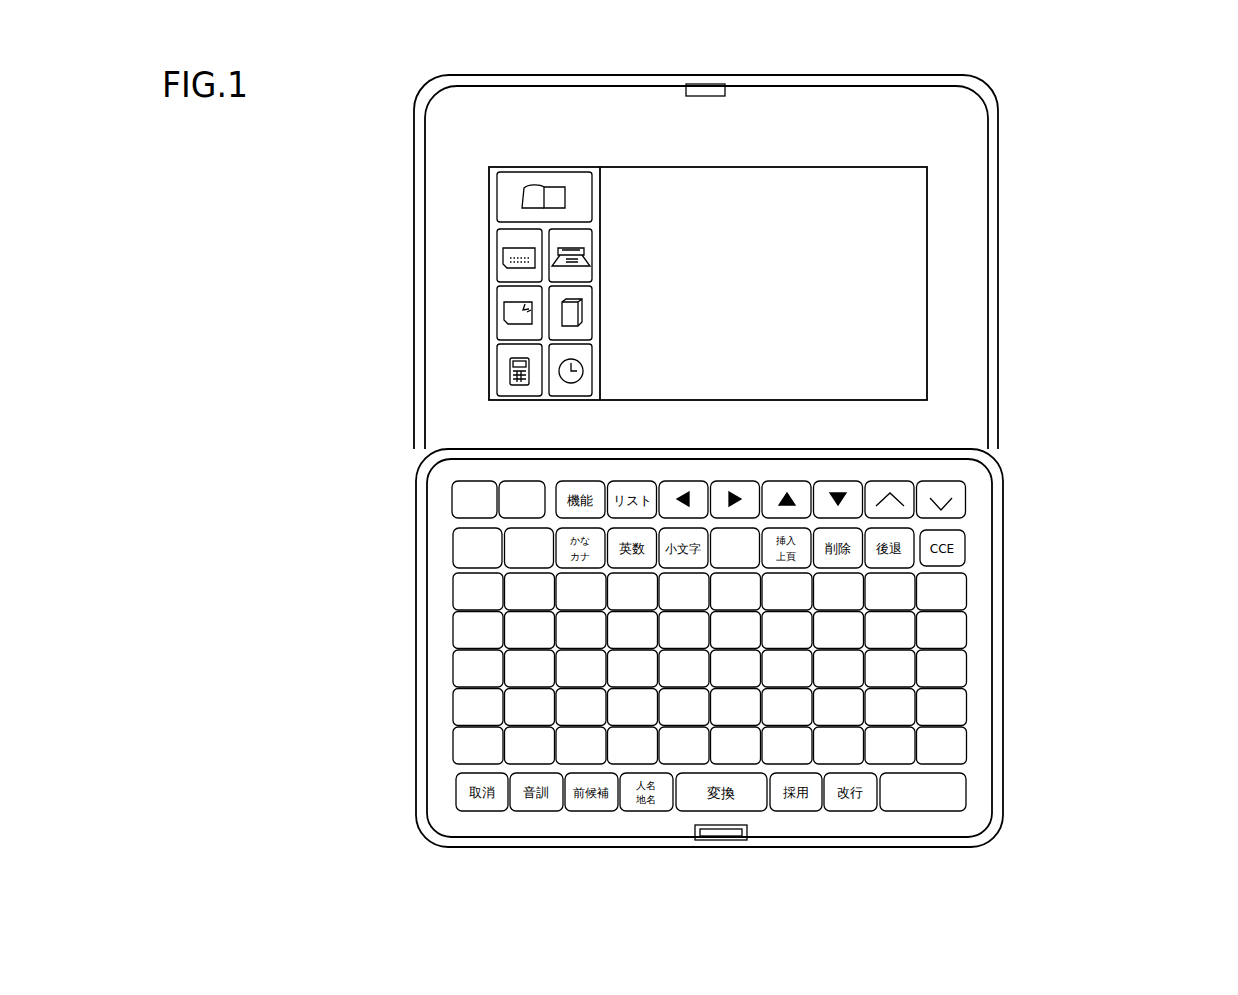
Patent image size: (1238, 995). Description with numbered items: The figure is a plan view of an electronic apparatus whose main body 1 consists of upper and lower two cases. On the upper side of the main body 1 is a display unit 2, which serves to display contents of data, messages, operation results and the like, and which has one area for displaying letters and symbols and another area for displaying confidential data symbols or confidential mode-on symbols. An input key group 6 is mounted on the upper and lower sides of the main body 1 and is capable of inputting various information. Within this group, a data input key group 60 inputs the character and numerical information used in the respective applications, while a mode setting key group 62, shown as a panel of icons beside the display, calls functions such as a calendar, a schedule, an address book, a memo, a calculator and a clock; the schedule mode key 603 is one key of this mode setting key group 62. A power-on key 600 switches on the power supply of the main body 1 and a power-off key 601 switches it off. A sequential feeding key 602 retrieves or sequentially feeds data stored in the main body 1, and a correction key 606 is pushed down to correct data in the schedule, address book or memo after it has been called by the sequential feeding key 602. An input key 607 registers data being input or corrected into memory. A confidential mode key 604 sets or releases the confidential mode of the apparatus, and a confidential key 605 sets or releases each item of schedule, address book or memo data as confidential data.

The main body 1 is at (1008, 453).
The display unit 2 is at (930, 222).
The input key group 6 is at (975, 668).
The data input key group 60 is at (960, 585).
The mode setting key group 62 is at (490, 287).
The power-on key 600 is at (478, 488).
The power-off key 601 is at (520, 487).
The sequential feeding key 602 is at (960, 512).
The schedule mode key 603 is at (503, 195).
The confidential mode key 604 is at (455, 545).
The confidential key 605 is at (497, 562).
The correction key 606 is at (735, 537).
The input key 607 is at (960, 793).